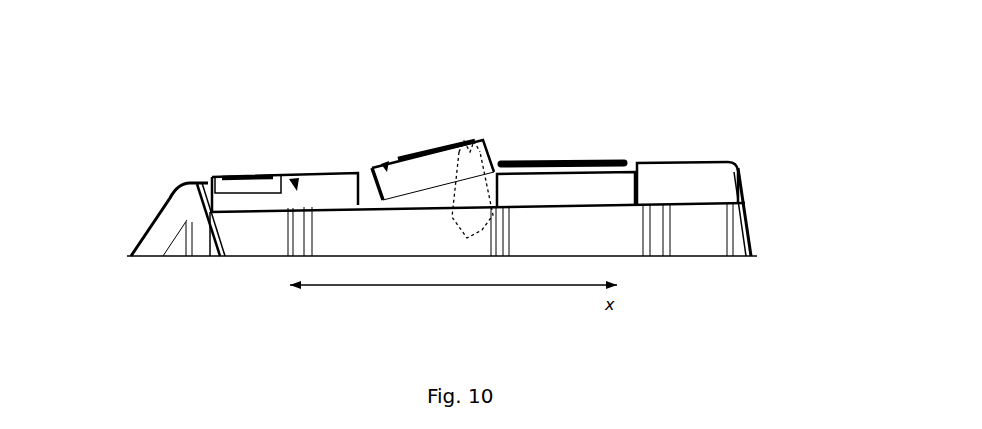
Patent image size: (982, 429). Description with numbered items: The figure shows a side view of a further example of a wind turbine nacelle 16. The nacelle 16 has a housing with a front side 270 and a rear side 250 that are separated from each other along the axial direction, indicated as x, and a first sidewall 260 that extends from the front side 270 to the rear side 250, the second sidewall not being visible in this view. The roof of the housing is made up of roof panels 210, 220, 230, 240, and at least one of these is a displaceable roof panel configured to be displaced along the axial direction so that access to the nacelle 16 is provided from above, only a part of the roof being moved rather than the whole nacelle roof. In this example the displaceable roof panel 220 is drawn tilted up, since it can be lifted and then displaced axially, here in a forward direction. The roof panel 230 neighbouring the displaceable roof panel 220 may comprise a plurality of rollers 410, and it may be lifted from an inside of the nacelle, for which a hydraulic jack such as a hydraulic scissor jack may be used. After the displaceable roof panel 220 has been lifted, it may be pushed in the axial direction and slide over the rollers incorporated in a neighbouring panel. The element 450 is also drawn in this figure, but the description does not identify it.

The wind turbine nacelle 16 is at (338, 106).
The roof panel 210 is at (240, 170).
The displaceable roof panel 220 is at (453, 170).
The roof panel 230 is at (555, 181).
The roof panel 240 is at (687, 181).
The rear side 250 is at (148, 238).
The first sidewall 260 is at (403, 248).
The front side 270 is at (751, 233).
The rollers 410 is at (497, 162).
The latch element 450 is at (487, 185).